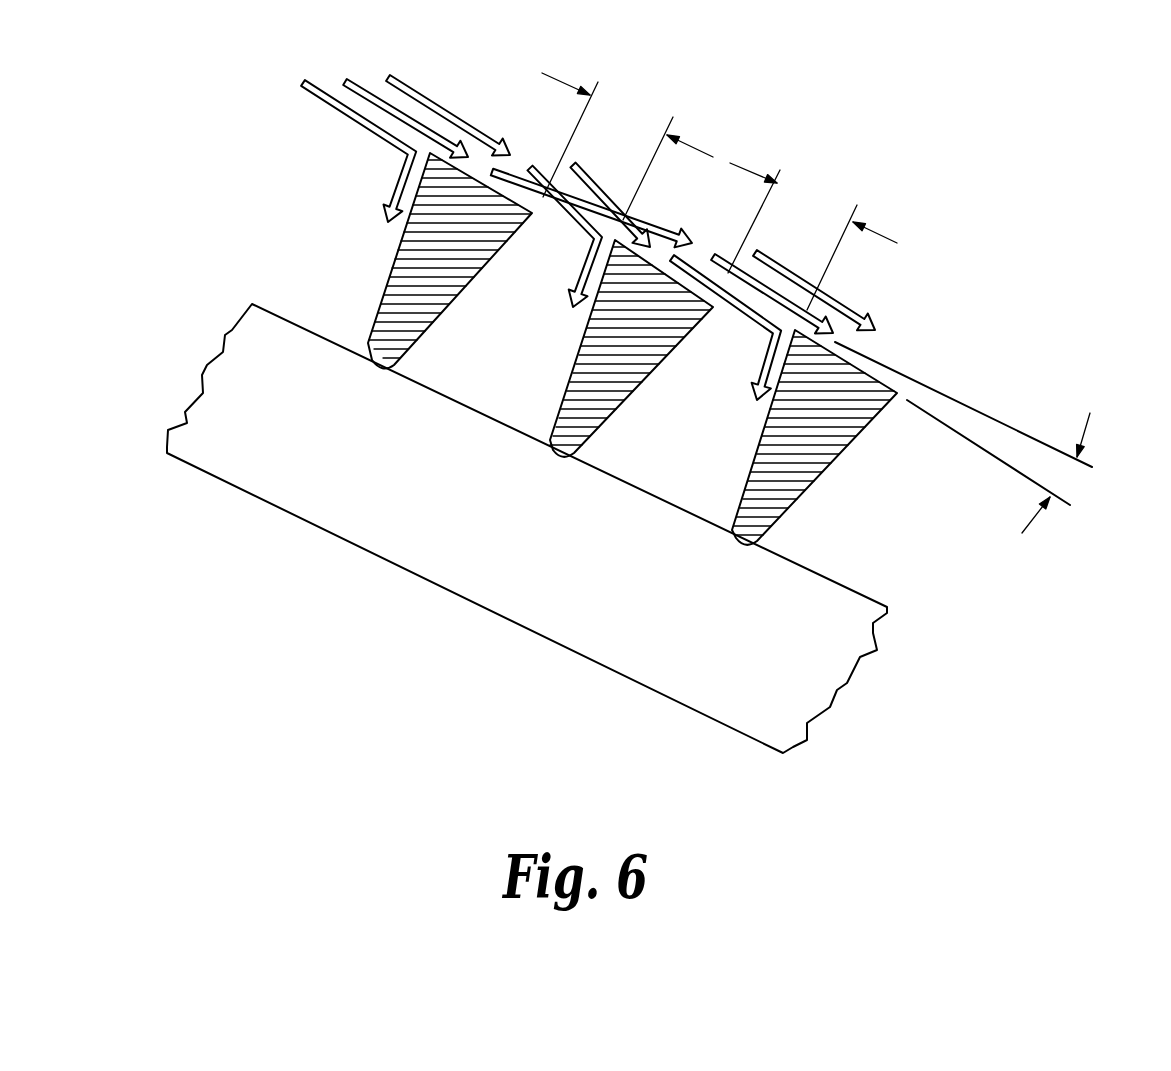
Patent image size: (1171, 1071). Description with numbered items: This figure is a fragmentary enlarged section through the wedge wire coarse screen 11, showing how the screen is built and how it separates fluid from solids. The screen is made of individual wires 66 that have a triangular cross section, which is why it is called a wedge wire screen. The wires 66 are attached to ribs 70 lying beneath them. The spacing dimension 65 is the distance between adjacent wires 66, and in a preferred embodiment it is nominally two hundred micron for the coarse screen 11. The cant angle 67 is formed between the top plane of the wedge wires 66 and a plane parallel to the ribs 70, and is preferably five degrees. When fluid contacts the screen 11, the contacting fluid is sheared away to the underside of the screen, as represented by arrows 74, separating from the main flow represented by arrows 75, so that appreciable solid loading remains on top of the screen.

The wedge wire coarse screen 11 is at (962, 333).
The spacing dimension 65 is at (625, 107).
The wires 66 is at (385, 287).
The cant angle 67 is at (1070, 480).
The ribs 70 is at (438, 543).
The arrows representing sheared fluid flow 74 is at (357, 125).
The arrows representing main flow 75 is at (452, 135).